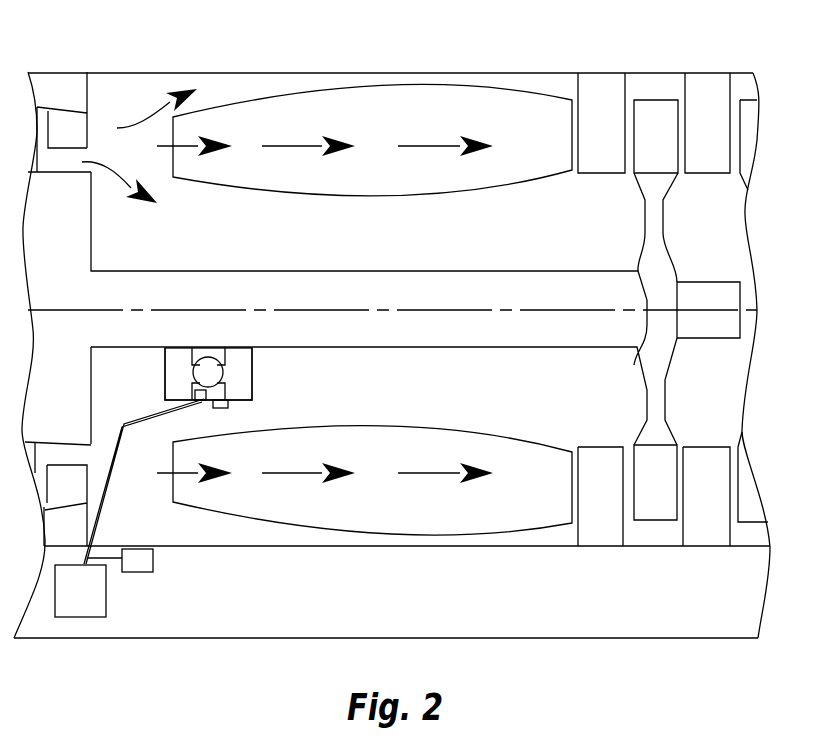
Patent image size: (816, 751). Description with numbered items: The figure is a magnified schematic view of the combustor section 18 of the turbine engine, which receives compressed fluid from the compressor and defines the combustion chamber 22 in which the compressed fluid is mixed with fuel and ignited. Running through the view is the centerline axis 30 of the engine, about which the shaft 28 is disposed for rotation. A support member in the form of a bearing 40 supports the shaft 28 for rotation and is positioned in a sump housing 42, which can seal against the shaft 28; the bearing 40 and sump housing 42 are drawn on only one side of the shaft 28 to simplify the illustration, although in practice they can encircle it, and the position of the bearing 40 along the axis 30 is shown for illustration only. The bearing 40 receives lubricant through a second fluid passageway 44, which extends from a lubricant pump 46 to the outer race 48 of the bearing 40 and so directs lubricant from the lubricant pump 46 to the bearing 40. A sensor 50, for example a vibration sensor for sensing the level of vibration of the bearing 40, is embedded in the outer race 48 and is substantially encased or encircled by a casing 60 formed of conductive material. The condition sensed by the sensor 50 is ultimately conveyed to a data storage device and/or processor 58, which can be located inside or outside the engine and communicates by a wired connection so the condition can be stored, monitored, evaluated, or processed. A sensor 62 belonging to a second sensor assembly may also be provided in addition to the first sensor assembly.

The combustor section 18 is at (519, 582).
The combustion chamber 22 is at (515, 133).
The shaft 28 is at (393, 292).
The centerline axis 30 is at (233, 300).
The bearing 40 is at (223, 370).
The sump housing 42 is at (253, 384).
The second fluid passageway 44 is at (131, 484).
The lubricant pump 46 is at (90, 602).
The outer race 48 is at (194, 384).
The sensor 50 is at (190, 393).
The data storage device and/or processor 58 is at (154, 563).
The casing 60 is at (299, 547).
The sensor 62 is at (224, 408).